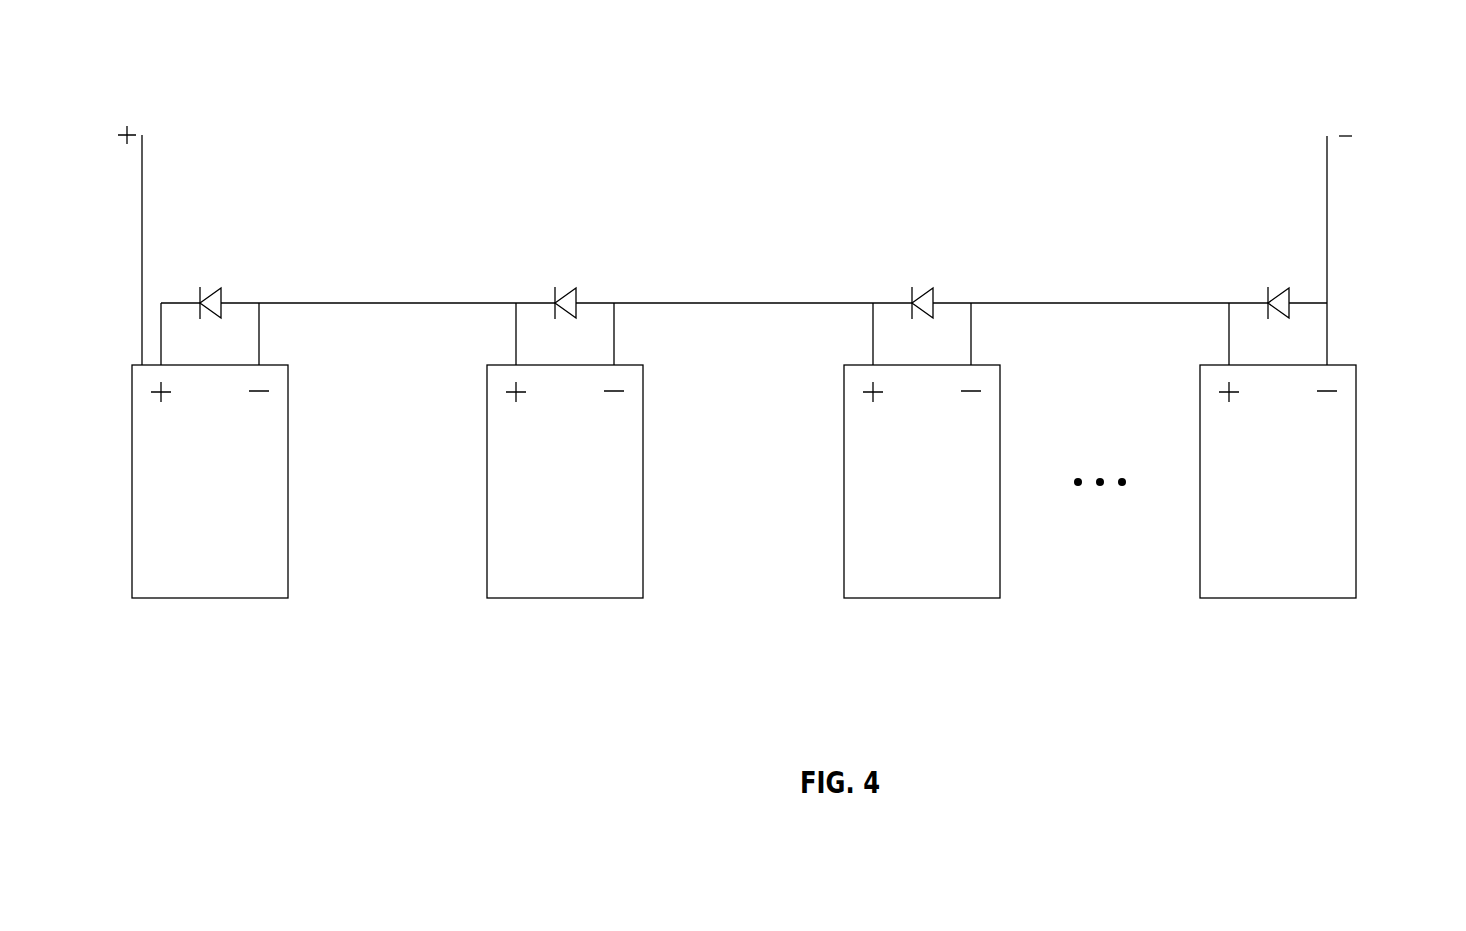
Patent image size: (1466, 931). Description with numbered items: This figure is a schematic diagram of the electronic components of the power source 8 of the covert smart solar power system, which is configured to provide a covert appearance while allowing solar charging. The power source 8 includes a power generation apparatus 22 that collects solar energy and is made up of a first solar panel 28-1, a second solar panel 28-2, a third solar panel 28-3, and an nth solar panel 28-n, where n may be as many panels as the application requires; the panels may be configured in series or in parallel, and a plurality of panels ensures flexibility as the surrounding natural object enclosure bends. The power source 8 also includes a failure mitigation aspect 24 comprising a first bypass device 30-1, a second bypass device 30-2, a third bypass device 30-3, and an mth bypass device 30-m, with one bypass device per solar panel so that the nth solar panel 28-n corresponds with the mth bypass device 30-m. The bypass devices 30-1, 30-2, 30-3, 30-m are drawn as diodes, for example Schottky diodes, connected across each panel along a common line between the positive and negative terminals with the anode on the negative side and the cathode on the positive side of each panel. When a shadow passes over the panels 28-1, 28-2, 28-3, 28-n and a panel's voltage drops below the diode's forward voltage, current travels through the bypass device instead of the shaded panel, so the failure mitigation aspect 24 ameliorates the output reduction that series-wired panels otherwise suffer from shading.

The power source 8 is at (1357, 103).
The power generation apparatus 22 is at (1378, 476).
The failure mitigation aspect 24 is at (1358, 265).
The first solar panel 28-1 is at (202, 598).
The second solar panel 28-2 is at (567, 598).
The third solar panel 28-3 is at (930, 598).
The nth solar panel 28-n is at (1295, 598).
The first bypass device 30-1 is at (212, 297).
The second bypass device 30-2 is at (570, 295).
The third bypass device 30-3 is at (923, 295).
The mth bypass device 30-m is at (1282, 293).